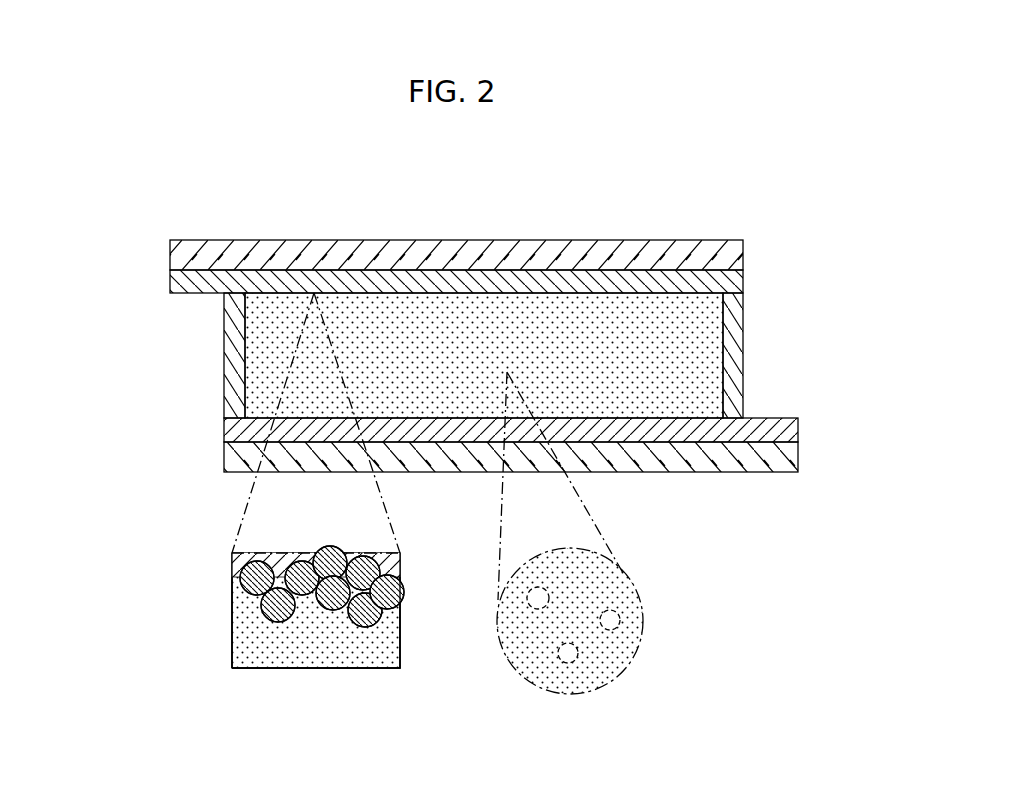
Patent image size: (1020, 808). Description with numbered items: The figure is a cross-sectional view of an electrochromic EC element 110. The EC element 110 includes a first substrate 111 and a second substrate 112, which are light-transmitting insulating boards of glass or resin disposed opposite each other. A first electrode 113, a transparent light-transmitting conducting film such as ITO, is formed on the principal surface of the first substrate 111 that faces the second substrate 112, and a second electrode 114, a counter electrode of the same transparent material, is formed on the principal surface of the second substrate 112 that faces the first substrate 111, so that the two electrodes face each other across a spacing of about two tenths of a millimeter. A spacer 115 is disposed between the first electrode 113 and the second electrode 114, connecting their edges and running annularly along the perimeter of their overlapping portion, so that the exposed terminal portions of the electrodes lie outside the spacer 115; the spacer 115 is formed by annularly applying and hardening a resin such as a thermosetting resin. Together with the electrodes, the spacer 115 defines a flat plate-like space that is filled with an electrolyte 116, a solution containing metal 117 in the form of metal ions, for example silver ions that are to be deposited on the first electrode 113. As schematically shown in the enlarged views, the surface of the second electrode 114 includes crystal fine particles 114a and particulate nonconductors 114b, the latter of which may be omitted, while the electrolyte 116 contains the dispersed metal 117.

The EC element 110 is at (852, 167).
The first substrate 111 is at (768, 455).
The second substrate 112 is at (603, 255).
The first electrode 113 is at (770, 428).
The second electrode 114 is at (728, 282).
The crystal fine particles 114a is at (363, 617).
The particulate nonconductors 114b is at (277, 617).
The spacer 115 is at (233, 372).
The electrolyte 116 is at (445, 398).
The metal 117 is at (576, 654).